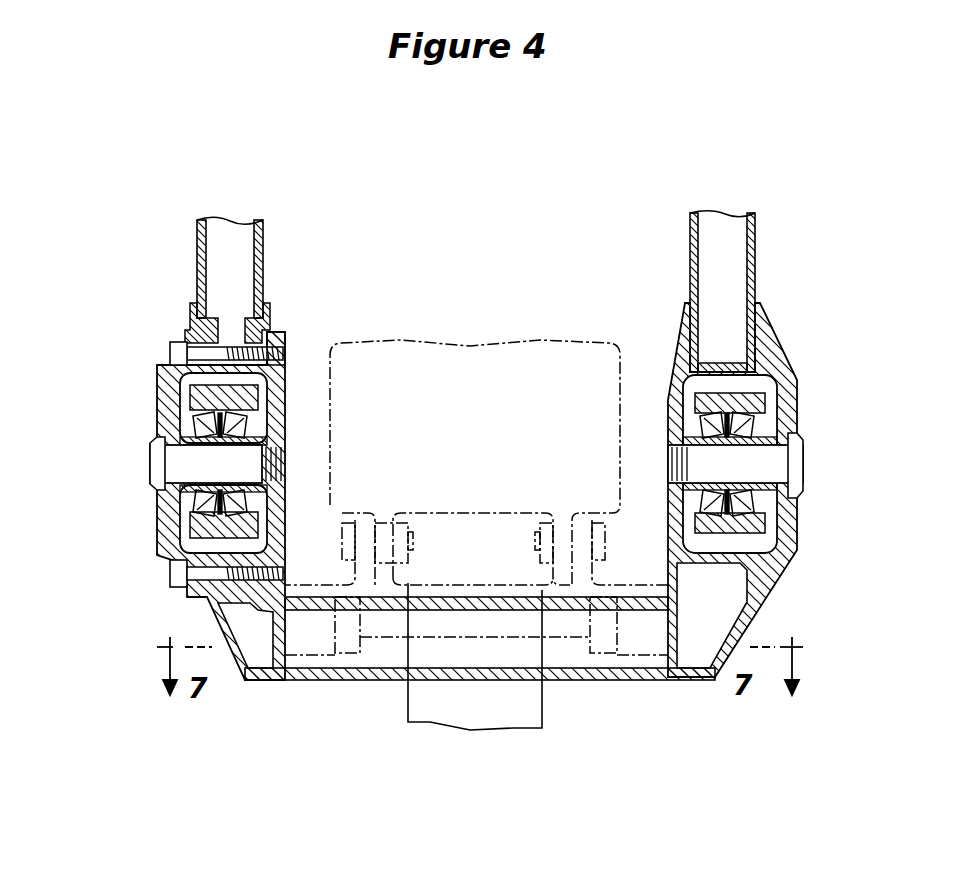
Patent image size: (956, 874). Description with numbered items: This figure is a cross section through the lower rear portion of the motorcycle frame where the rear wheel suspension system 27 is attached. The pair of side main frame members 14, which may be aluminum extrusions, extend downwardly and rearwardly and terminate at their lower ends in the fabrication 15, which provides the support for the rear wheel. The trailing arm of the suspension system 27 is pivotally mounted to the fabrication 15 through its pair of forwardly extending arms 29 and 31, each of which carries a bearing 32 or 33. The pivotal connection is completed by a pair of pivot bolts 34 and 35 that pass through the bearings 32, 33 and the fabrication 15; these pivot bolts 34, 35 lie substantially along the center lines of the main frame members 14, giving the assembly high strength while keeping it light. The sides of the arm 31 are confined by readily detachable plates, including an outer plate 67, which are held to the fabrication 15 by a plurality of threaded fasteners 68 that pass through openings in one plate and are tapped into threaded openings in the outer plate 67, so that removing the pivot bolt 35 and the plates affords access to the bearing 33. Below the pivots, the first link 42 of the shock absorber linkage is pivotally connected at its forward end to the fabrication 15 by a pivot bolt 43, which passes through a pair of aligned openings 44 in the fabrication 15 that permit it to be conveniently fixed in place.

The side main frame members 14 is at (263, 240).
The fabrication 15 is at (267, 688).
The suspension system 27 is at (104, 625).
The forwardly extending arm 29 is at (745, 393).
The forwardly extending arm 31 is at (190, 397).
The bearing 32 is at (745, 427).
The bearing 33 is at (200, 416).
The pivot bolt 34 is at (805, 460).
The pivot bolt 35 is at (150, 467).
The first link 42 is at (542, 708).
The pivot bolt 43 is at (340, 660).
The aligned openings 44 is at (293, 600).
The outer plate 67 is at (185, 337).
The threaded fasteners 68 is at (170, 350).